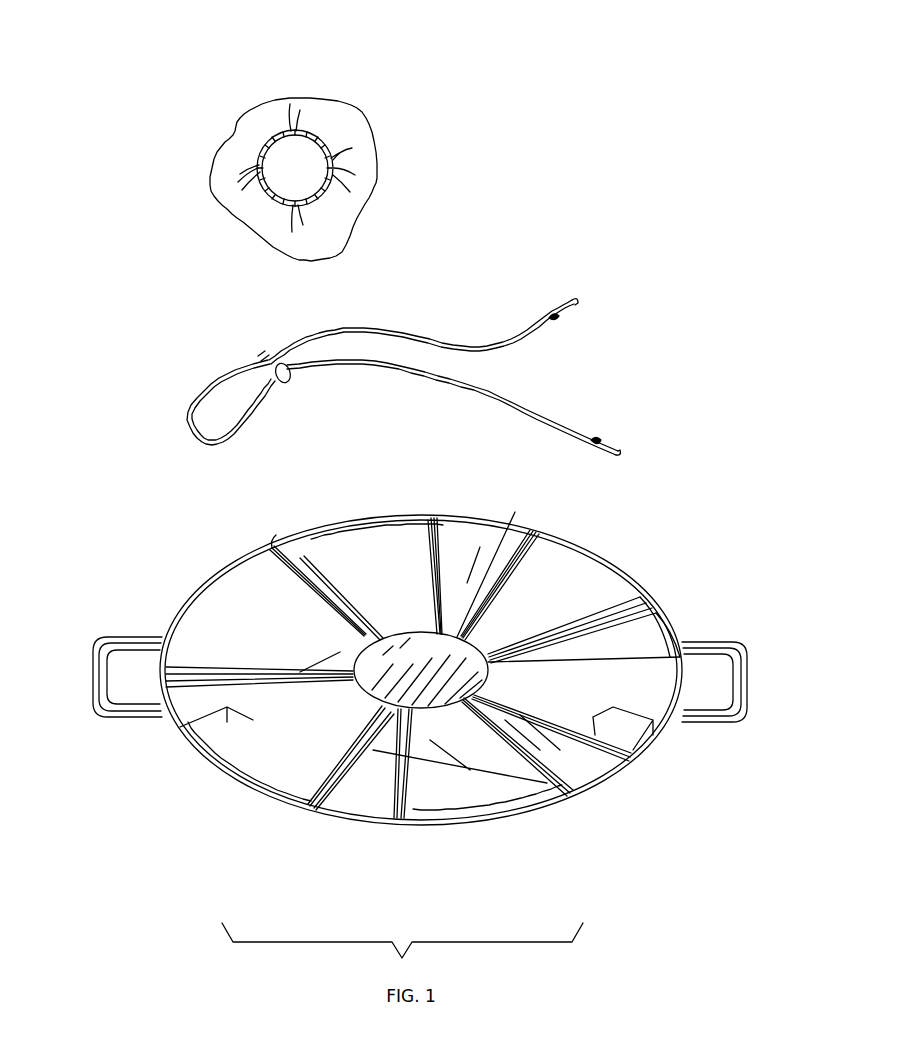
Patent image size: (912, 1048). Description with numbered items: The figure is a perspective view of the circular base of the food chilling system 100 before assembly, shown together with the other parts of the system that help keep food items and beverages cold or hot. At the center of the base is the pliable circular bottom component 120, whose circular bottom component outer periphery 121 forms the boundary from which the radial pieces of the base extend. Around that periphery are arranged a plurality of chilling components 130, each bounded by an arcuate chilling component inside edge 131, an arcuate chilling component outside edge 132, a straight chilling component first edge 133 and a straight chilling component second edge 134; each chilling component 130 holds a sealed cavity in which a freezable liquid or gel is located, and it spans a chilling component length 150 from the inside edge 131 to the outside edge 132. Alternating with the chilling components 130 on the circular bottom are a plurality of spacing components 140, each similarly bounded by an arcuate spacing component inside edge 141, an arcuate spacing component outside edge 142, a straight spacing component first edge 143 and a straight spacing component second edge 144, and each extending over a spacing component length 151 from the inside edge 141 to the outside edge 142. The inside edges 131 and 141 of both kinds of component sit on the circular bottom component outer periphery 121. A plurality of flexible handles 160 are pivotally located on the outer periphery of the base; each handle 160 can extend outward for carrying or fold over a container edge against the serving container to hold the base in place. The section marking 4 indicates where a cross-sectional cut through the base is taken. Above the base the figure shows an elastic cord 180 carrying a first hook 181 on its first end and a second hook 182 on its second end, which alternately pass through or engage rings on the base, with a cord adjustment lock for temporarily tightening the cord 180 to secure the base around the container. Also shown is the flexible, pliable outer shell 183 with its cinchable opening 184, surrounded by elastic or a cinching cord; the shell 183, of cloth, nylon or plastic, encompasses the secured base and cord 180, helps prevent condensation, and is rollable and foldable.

The food chilling system 100 is at (108, 84).
The pliable circular bottom component 120 is at (440, 653).
The circular bottom component outer periphery 121 is at (463, 633).
The chilling component 130 is at (430, 790).
The chilling component inside edge 131 is at (392, 625).
The chilling component outside edge 132 is at (288, 540).
The chilling component first edge 133 is at (262, 550).
The chilling component second edge 134 is at (440, 523).
The spacing component 140 is at (577, 780).
The spacing component inside edge 141 is at (490, 658).
The spacing component outside edge 142 is at (660, 648).
The spacing component first edge 143 is at (643, 610).
The spacing component second edge 144 is at (657, 653).
The chilling component length 150 is at (318, 648).
The spacing component length 151 is at (366, 637).
The flexible handle 160 is at (724, 646).
The elastic cord 180 is at (192, 405).
The first hook 181 is at (584, 306).
The second hook 182 is at (606, 445).
The outer shell 183 is at (343, 135).
The cinchable opening 184 is at (216, 152).
The section line 4 is at (158, 728).